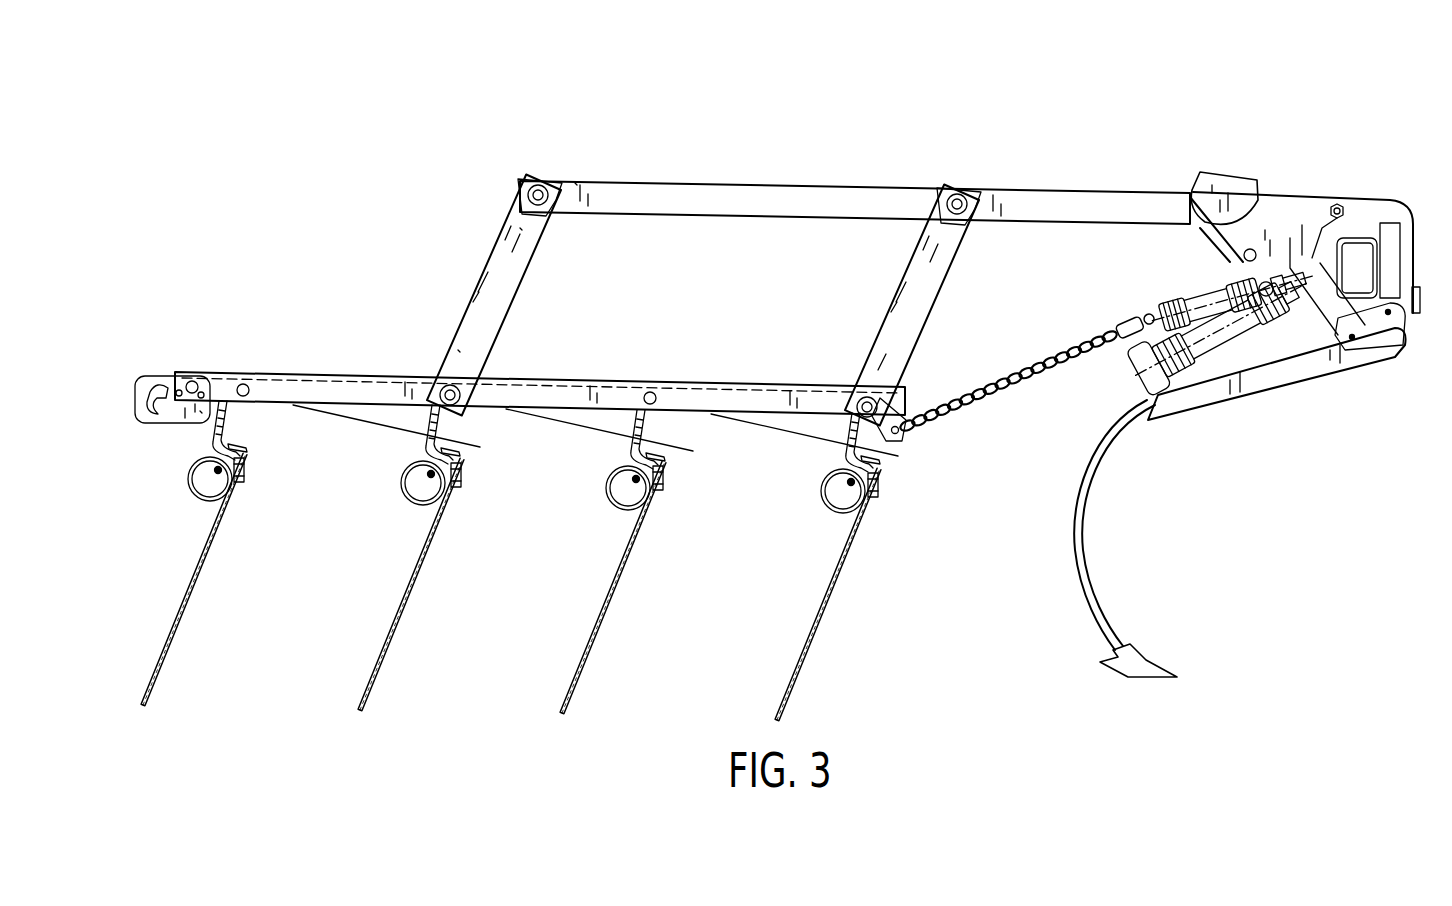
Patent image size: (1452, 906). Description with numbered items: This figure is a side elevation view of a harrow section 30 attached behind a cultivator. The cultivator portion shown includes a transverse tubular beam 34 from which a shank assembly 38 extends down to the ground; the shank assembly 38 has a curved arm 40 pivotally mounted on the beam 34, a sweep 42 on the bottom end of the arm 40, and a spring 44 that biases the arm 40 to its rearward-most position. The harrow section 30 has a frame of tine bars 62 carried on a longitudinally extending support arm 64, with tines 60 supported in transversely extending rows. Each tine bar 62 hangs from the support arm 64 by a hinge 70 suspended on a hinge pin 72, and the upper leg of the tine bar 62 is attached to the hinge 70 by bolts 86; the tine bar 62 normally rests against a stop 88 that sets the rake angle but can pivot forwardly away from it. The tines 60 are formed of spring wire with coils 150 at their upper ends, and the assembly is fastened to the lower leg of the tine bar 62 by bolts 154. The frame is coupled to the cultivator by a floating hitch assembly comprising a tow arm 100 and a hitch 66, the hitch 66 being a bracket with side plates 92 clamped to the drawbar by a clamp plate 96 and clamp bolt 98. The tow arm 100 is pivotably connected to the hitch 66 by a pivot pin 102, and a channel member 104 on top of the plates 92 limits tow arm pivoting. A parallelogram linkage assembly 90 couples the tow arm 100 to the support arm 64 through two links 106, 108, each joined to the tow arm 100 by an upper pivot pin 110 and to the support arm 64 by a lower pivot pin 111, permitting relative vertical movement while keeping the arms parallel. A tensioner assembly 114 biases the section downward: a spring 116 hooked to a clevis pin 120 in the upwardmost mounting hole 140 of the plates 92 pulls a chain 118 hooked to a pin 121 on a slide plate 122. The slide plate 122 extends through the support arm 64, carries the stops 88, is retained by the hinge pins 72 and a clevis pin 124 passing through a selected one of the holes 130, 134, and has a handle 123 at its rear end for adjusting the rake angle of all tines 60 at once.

The harrow section 30 is at (882, 686).
The transverse tubular beam 34 is at (1277, 383).
The shank assembly 38 is at (1057, 525).
The curved arm 40 is at (1039, 621).
The sweep 42 is at (1107, 669).
The spring 44 is at (1205, 423).
The tine 60 is at (511, 587).
The tine bar 62 is at (582, 495).
The support arm 64 is at (540, 353).
The hitch 66 is at (1314, 136).
The hinge 70 is at (565, 391).
The hinge pin 72 is at (446, 357).
The bolt 86 is at (592, 462).
The stop 88 is at (514, 454).
The parallelogram linkage assembly 90 is at (683, 126).
The side plate 92 is at (1301, 218).
The clamp plate 96 is at (1390, 230).
The clamp bolt 98 is at (1383, 347).
The tow arm 100 is at (855, 162).
The pivot pin 102 is at (1363, 168).
The channel member 104 is at (1214, 166).
The link 106 is at (893, 305).
The link 108 is at (488, 295).
The upper pivot pin 110 is at (726, 170).
The lower pivot pin 111 is at (632, 372).
The tensioner assembly 114 is at (1036, 284).
The spring 116 is at (1199, 294).
The chain 118 is at (1027, 367).
The clevis pin 120 is at (1221, 358).
The pin 121 is at (949, 439).
The slide plate 122 is at (540, 428).
The handle 123 is at (150, 362).
The clevis pin 124 is at (205, 318).
The hole 130 is at (176, 335).
The hole 134 is at (227, 340).
The mounting hole 140 is at (1199, 247).
The coil 150 is at (507, 519).
The bolt 154 is at (574, 515).